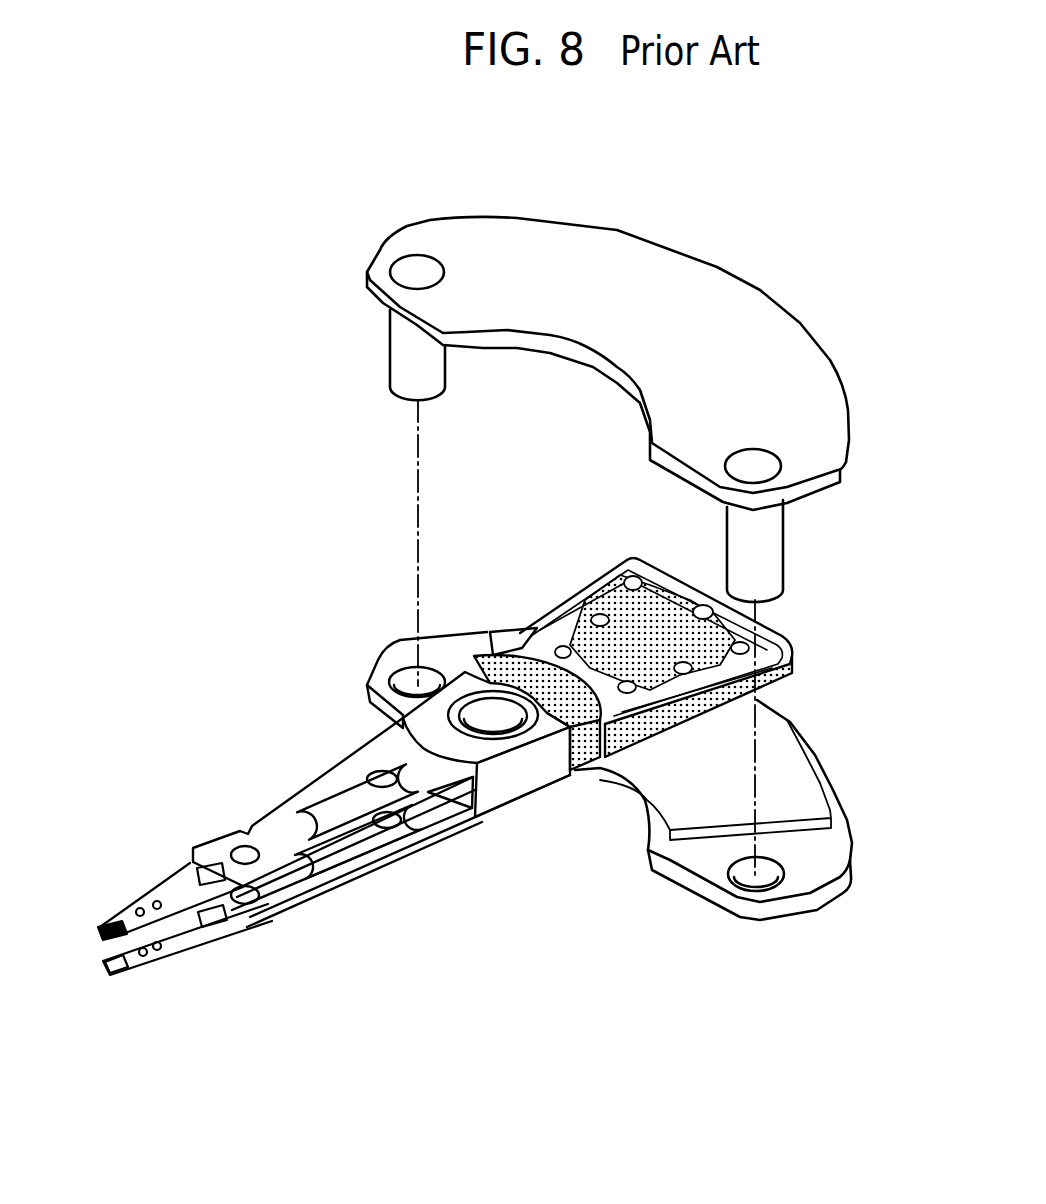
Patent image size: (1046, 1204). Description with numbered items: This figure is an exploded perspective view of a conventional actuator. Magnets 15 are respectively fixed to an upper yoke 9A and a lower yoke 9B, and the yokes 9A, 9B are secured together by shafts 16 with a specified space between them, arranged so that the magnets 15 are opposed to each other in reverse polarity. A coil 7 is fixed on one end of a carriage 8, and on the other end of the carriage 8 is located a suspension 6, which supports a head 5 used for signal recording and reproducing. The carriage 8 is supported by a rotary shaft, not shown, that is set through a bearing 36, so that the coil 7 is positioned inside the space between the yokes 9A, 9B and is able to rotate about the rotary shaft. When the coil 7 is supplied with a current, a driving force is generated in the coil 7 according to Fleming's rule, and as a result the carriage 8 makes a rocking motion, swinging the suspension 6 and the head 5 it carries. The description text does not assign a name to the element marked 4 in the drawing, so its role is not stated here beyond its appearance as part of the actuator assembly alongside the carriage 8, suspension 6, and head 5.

The suspension arm 4 is at (313, 776).
The head 5 is at (100, 930).
The suspension 6 is at (178, 896).
The coil 7 is at (790, 648).
The carriage 8 is at (527, 777).
The upper yoke 9A is at (770, 323).
The lower yoke 9B is at (827, 852).
The magnet 15 is at (515, 348).
The shaft 16 is at (417, 363).
The bearing 36 is at (492, 710).